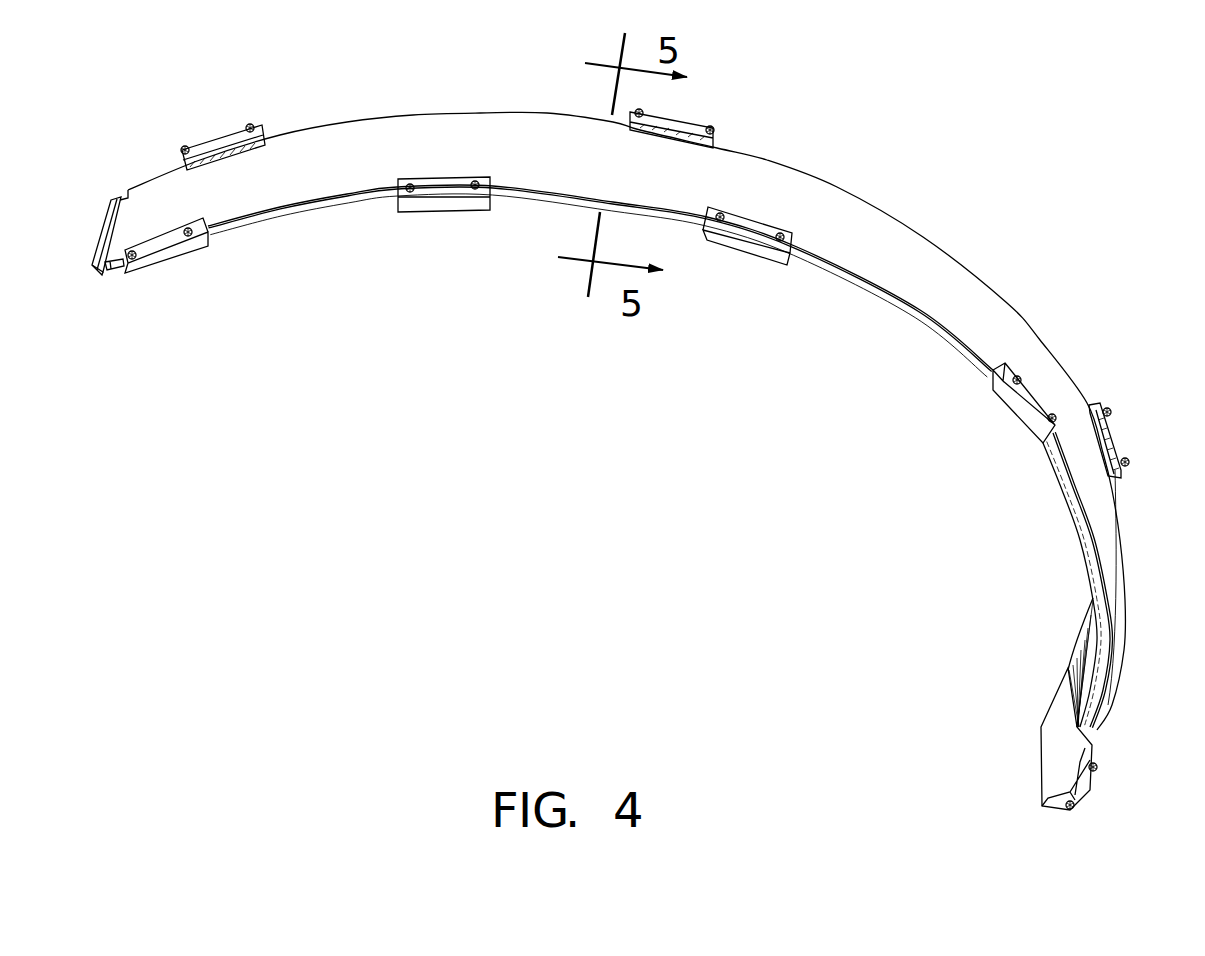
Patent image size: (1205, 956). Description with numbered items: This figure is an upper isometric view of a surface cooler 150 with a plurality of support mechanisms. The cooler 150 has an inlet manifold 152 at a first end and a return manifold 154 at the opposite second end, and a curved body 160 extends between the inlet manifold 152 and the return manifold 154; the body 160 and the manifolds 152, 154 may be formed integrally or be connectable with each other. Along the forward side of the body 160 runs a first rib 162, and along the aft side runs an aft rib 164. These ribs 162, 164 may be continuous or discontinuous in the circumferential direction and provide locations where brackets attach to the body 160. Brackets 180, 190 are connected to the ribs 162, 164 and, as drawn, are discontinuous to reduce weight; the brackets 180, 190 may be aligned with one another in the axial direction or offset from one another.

The surface cooler 150 is at (1000, 192).
The inlet manifold 152 is at (1037, 740).
The return manifold 154 is at (111, 283).
The body 160 is at (993, 323).
The first rib 162 is at (837, 187).
The aft rib 164 is at (920, 310).
The bracket 180 is at (688, 117).
The bracket 190 is at (410, 217).